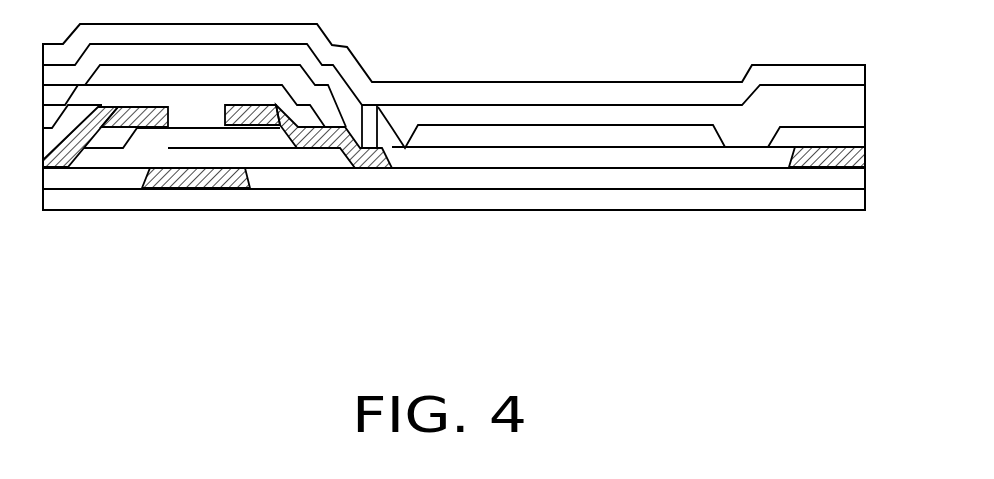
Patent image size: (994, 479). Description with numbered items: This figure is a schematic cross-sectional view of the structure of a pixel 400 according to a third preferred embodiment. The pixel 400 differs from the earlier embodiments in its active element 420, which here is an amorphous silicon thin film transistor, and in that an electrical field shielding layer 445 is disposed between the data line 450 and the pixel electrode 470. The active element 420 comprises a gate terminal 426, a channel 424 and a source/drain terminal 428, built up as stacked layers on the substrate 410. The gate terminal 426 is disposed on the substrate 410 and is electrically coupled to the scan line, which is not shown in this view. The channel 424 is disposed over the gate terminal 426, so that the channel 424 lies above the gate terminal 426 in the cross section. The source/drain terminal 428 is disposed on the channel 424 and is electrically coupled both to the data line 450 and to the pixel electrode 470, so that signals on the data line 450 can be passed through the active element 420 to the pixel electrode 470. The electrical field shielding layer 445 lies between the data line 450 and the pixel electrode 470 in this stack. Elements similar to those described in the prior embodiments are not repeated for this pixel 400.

The pixel 400 is at (875, 360).
The substrate 410 is at (597, 200).
The active element 420 is at (84, 188).
The channel 424 is at (296, 152).
The gate terminal 426 is at (163, 190).
The source/drain terminal 428 is at (150, 126).
The electrical field shielding layer 445 is at (842, 118).
The data line 450 is at (795, 168).
The pixel electrode 470 is at (742, 86).